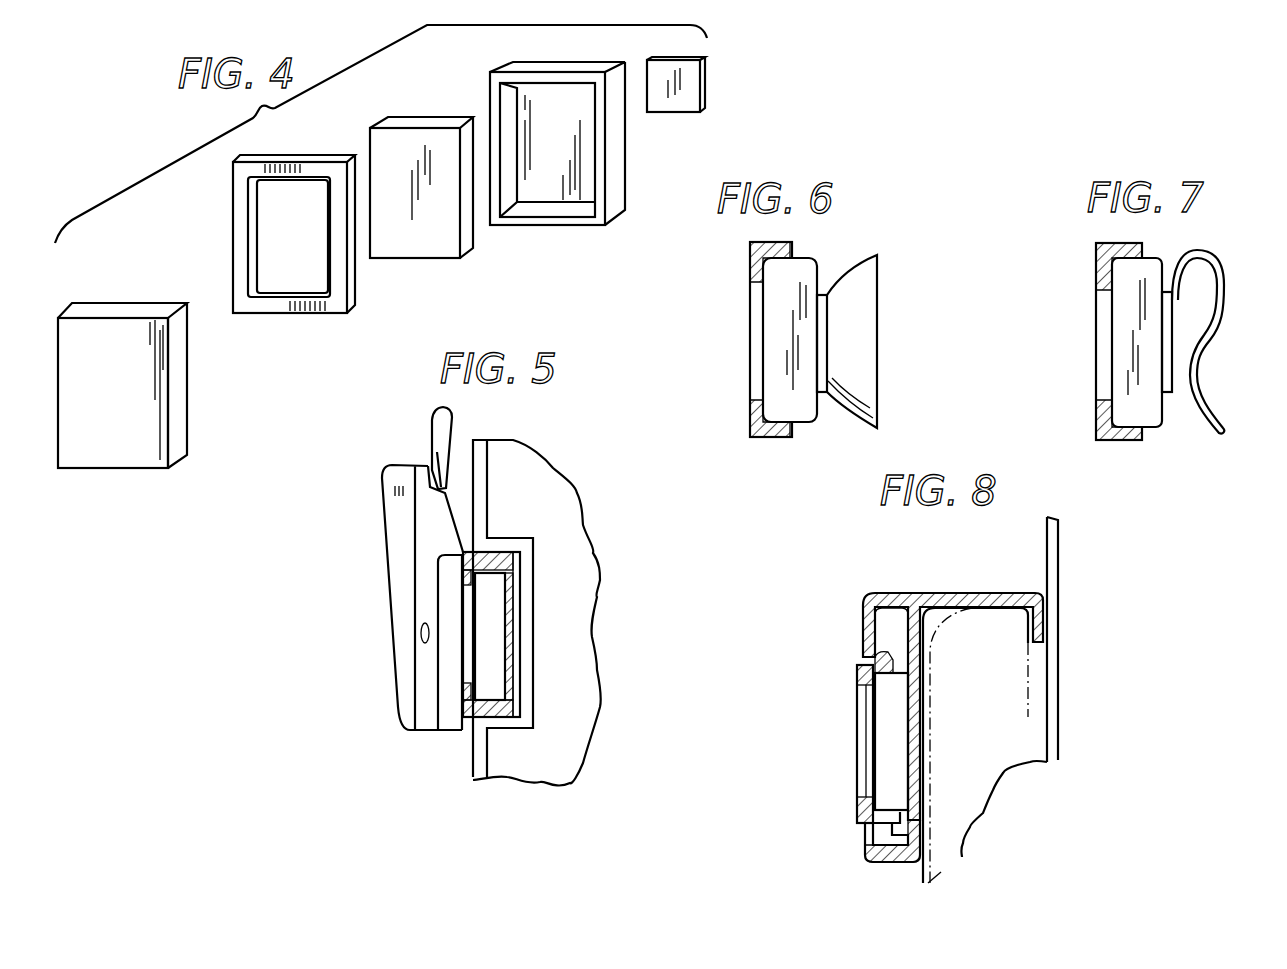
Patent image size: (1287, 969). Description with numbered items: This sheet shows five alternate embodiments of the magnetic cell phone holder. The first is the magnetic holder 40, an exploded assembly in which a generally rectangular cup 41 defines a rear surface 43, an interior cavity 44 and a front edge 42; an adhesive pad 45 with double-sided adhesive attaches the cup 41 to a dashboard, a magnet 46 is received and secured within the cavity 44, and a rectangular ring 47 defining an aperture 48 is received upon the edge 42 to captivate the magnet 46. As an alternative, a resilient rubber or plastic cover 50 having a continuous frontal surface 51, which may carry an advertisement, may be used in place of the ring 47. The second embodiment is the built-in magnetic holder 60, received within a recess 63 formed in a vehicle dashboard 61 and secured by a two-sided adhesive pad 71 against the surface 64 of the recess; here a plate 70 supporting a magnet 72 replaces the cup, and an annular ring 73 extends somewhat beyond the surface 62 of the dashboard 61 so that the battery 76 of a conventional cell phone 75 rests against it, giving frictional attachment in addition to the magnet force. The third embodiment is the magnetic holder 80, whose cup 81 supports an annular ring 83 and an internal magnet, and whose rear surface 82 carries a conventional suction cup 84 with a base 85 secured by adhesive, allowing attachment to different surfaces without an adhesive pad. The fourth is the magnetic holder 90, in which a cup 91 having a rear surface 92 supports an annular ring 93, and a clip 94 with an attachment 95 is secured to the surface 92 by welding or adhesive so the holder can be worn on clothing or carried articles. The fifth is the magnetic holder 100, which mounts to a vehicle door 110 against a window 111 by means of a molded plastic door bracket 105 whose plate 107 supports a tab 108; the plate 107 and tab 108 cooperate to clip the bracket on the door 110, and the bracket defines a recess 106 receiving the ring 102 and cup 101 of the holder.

In FIG. 4, the magnetic cell phone holder 40 is at (722, 145).
In FIG. 4, the cup 41 is at (620, 192).
In FIG. 4, the front edge 42 is at (600, 222).
In FIG. 4, the rear surface 43 is at (560, 128).
In FIG. 4, the interior cavity 44 is at (545, 212).
In FIG. 4, the adhesive pad 45 is at (690, 90).
In FIG. 4, the magnet 46 is at (425, 258).
In FIG. 4, the rectangular ring 47 is at (268, 313).
In FIG. 4, the aperture 48 is at (262, 203).
In FIG. 4, the cover 50 is at (180, 420).
In FIG. 4, the frontal surface 51 is at (125, 448).
In FIG. 5, the magnetic holder 60 is at (607, 562).
In FIG. 5, the vehicle dashboard 61 is at (543, 490).
In FIG. 5, the surface 62 is at (463, 468).
In FIG. 5, the recess 63 is at (528, 560).
In FIG. 5, the surface 64 is at (525, 588).
In FIG. 5, the plate 70 is at (520, 648).
In FIG. 5, the two-sided adhesive pad 71 is at (515, 622).
In FIG. 5, the magnet 72 is at (495, 660).
In FIG. 5, the annular ring 73 is at (463, 725).
In FIG. 5, the cell phone 75 is at (385, 572).
In FIG. 5, the cell phone battery 76 is at (443, 667).
In FIG. 6, the magnetic cell phone holder 80 is at (745, 325).
In FIG. 6, the cup 81 is at (815, 424).
In FIG. 6, the rear surface 82 is at (825, 400).
In FIG. 6, the annular ring 83 is at (768, 437).
In FIG. 6, the suction cup 84 is at (881, 336).
In FIG. 6, the base 85 is at (825, 295).
In FIG. 7, the magnetic holder 90 is at (1082, 372).
In FIG. 7, the cup 91 is at (1155, 428).
In FIG. 7, the rear surface 92 is at (1164, 398).
In FIG. 7, the annular ring 93 is at (1103, 440).
In FIG. 7, the clip 94 is at (1226, 268).
In FIG. 7, the attachment 95 is at (1172, 333).
In FIG. 8, the magnetic cell phone holder 100 is at (855, 600).
In FIG. 8, the cup 101 is at (893, 827).
In FIG. 8, the ring 102 is at (858, 825).
In FIG. 8, the door bracket 105 is at (930, 592).
In FIG. 8, the recess 106 is at (880, 815).
In FIG. 8, the plate 107 is at (978, 593).
In FIG. 8, the tab 108 is at (1030, 628).
In FIG. 8, the vehicle door 110 is at (997, 785).
In FIG. 8, the vehicle window 111 is at (1045, 570).